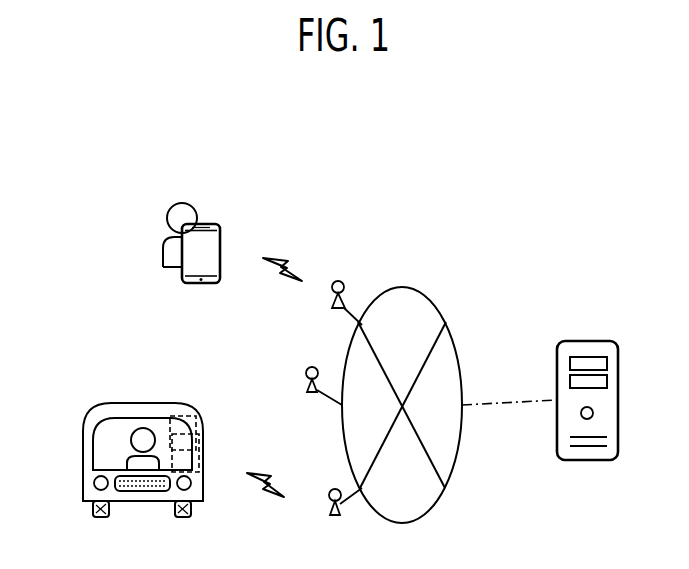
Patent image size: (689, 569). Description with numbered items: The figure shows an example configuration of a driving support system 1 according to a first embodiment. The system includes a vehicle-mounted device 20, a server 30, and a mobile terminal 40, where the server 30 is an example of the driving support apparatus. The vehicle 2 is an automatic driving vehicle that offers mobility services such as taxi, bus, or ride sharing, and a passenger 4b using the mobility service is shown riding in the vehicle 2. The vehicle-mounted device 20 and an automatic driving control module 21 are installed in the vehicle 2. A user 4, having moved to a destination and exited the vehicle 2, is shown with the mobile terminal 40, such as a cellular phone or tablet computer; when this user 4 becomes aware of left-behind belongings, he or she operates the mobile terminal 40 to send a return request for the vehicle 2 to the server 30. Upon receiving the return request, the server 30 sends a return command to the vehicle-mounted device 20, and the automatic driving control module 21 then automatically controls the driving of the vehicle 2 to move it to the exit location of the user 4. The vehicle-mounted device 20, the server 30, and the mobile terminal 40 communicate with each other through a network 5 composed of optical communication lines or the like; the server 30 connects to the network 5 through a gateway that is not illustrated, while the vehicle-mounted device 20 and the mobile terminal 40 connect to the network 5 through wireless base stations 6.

The driving support system 1 is at (565, 236).
The vehicle 2 is at (83, 482).
The passenger (user) 4 is at (166, 217).
The passenger 4b is at (143, 428).
The network 5 is at (403, 287).
The wireless base station 6 is at (338, 280).
The vehicle-mounted device 20 is at (205, 460).
The automatic driving control module 21 is at (203, 421).
The server 30 is at (587, 341).
The mobile terminal 40 is at (207, 223).